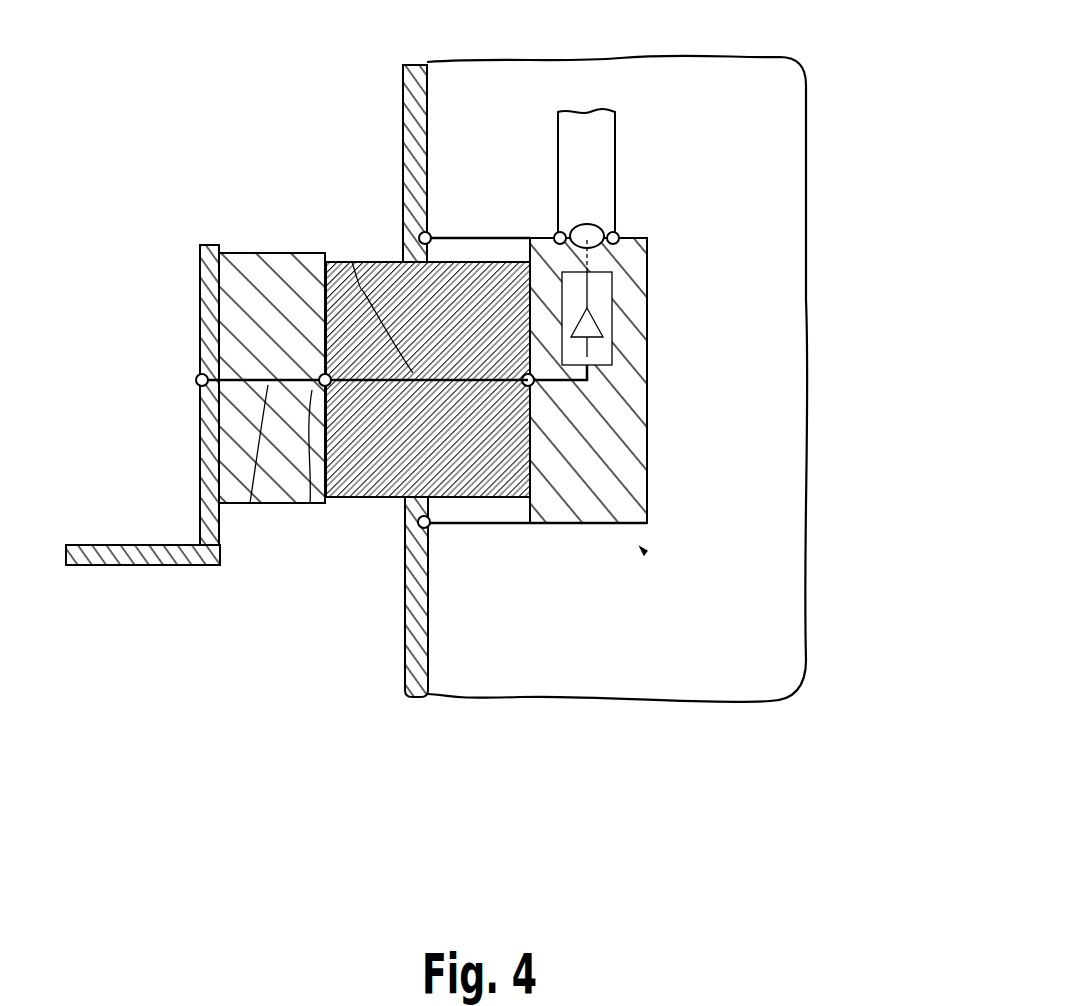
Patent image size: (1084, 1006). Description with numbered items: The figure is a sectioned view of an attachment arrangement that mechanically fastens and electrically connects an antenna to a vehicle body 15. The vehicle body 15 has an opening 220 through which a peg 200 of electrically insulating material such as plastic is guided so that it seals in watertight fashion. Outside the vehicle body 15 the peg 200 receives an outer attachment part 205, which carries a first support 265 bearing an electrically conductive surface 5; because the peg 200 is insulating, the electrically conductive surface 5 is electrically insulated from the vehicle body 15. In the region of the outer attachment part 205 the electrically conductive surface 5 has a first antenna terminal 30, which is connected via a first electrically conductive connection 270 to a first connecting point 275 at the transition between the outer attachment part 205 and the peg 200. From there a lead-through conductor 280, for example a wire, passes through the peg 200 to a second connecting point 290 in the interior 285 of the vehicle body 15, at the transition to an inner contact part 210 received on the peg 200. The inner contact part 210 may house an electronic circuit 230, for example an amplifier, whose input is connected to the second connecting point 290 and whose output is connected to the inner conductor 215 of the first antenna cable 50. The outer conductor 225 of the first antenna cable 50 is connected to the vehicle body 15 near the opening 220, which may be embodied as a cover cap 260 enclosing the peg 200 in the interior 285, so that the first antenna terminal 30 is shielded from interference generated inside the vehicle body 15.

The electrically conductive surface 5 is at (95, 545).
The vehicle body 15 is at (403, 92).
The first antenna terminal 30 is at (198, 378).
The first antenna cable 50 is at (597, 182).
The peg 200 is at (402, 293).
The outer attachment part 205 is at (257, 250).
The inner contact part 210 is at (590, 525).
The inner conductor 215 is at (615, 263).
The opening 220 is at (403, 500).
The outer conductor 225 is at (510, 237).
The electronic circuit 230 is at (607, 345).
The cover cap 260 is at (644, 555).
The first support 265 is at (127, 565).
The first electrically conductive connection 270 is at (250, 503).
The first connecting point 275 is at (310, 503).
The lead-through conductor 280 is at (352, 262).
The interior 285 is at (777, 190).
The second connecting point 290 is at (534, 388).